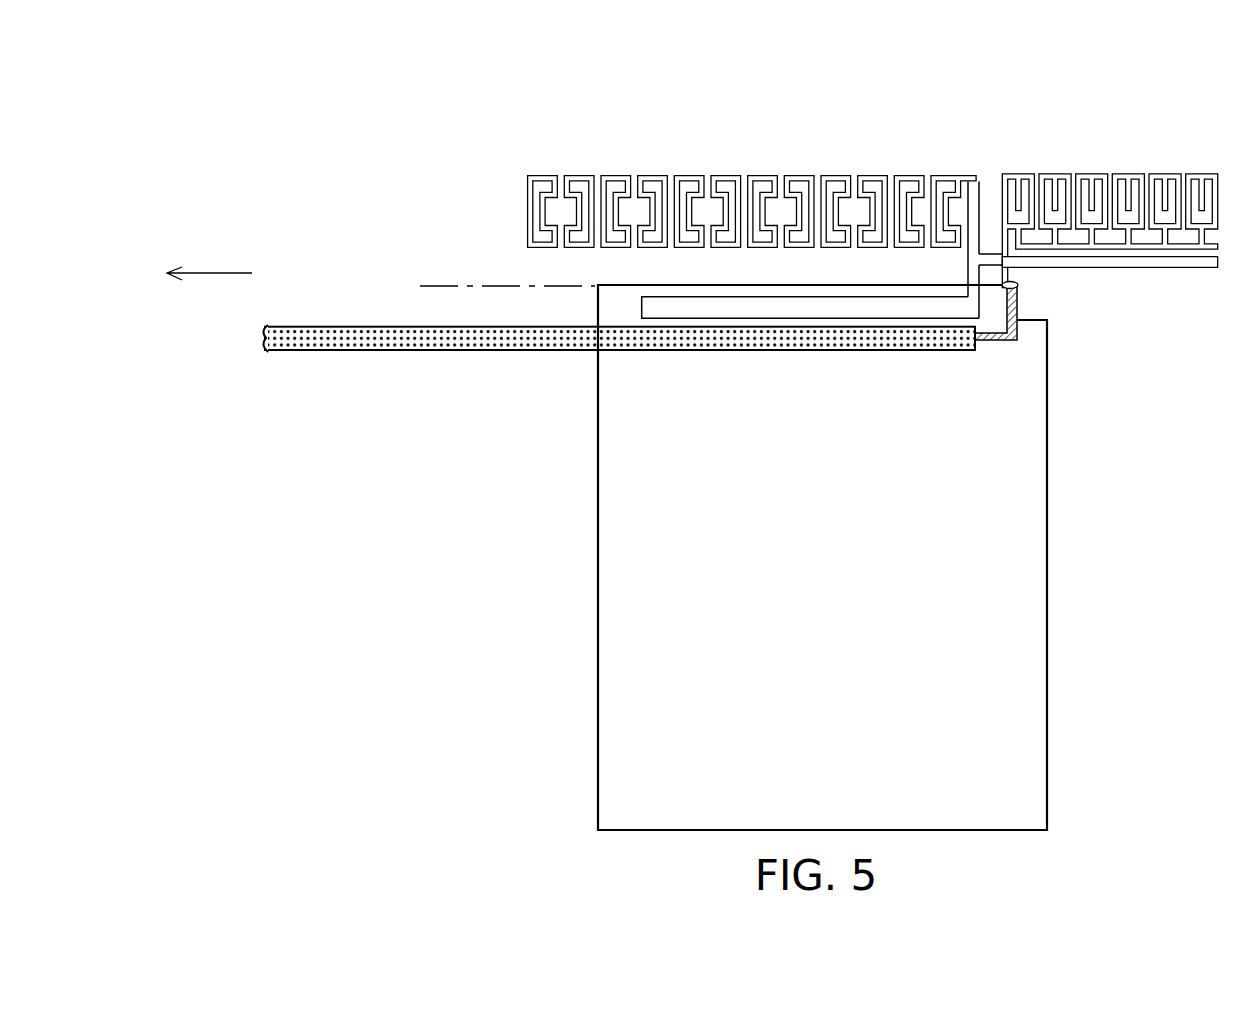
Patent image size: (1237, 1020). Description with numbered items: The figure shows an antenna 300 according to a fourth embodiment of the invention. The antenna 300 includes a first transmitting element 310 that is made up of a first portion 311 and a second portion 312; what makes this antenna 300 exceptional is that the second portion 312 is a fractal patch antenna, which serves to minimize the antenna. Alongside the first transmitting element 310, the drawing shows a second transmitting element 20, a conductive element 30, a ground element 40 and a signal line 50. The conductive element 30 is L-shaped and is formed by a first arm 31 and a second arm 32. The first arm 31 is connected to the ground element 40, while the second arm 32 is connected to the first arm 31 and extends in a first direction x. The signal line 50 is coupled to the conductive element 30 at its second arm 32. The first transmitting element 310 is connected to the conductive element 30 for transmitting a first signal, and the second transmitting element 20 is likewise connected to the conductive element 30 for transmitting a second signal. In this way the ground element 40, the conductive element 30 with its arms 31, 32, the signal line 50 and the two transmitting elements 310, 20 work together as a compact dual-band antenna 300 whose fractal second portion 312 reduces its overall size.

The antenna 300 is at (244, 93).
The first transmitting element 310 is at (766, 173).
The second portion 312 is at (888, 178).
The first portion 311 is at (968, 193).
The second transmitting element 20 is at (1161, 178).
The conductive element 30 is at (621, 370).
The first arm 31 is at (622, 307).
The second arm 32 is at (712, 283).
The ground element 40 is at (1035, 573).
The signal line 50 is at (1017, 305).